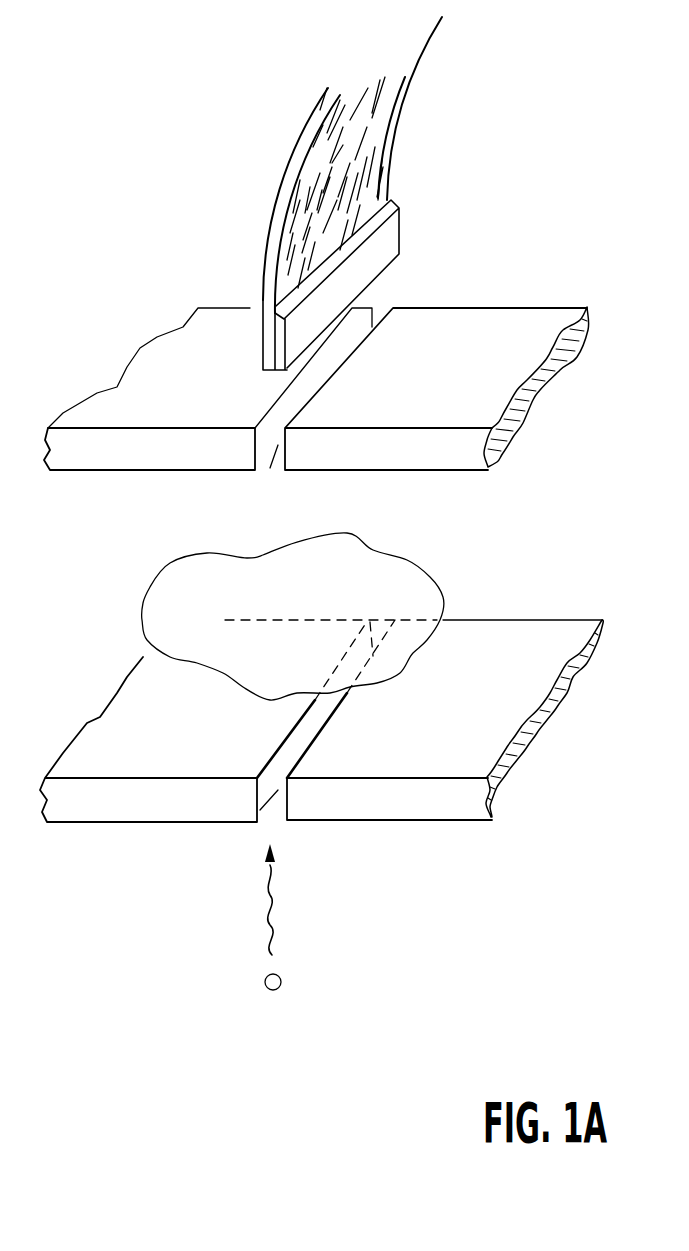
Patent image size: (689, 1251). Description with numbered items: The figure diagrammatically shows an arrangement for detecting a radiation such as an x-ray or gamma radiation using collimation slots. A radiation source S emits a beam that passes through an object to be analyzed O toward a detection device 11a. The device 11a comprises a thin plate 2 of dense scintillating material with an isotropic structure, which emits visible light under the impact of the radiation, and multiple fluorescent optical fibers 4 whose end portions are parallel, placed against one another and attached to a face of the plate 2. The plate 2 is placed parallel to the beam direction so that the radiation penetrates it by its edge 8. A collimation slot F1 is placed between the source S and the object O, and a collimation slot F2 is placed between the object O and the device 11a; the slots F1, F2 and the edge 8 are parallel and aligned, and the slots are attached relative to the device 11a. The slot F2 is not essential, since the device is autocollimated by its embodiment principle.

The fluorescent optical fibers 4 is at (305, 177).
The thin plate 2 is at (288, 330).
The edge of the plate 8 is at (392, 258).
The device 11a is at (222, 358).
The collimation slot F2 is at (273, 462).
The collimation slot F1 is at (273, 812).
The object to be analyzed O is at (167, 594).
The radiation source S is at (265, 983).